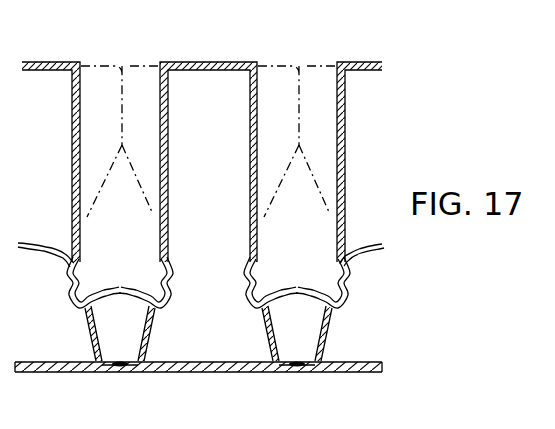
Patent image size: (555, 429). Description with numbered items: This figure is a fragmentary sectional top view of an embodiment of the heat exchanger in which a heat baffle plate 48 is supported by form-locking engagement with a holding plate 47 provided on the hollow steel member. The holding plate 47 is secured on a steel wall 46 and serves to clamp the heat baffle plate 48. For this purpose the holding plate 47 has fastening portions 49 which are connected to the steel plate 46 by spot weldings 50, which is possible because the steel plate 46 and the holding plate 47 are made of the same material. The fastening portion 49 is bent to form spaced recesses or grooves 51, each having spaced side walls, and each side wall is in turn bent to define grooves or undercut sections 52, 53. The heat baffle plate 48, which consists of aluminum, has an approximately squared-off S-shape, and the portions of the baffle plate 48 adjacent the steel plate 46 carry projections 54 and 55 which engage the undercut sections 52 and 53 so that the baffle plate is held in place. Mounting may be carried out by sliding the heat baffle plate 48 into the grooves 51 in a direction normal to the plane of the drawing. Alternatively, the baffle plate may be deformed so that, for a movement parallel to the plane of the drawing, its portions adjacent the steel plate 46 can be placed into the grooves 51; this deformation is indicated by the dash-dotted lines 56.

The steel wall 46 is at (382, 368).
The holding plate 47 is at (240, 287).
The heat baffle plate 48 is at (350, 152).
The fastening portions 49 is at (316, 368).
The spot weldings 50 is at (295, 366).
The grooves 51 is at (310, 323).
The undercut section 52 is at (272, 284).
The undercut section 53 is at (324, 282).
The projection 54 is at (148, 288).
The projection 55 is at (94, 288).
The dash-dotted lines 56 is at (270, 66).